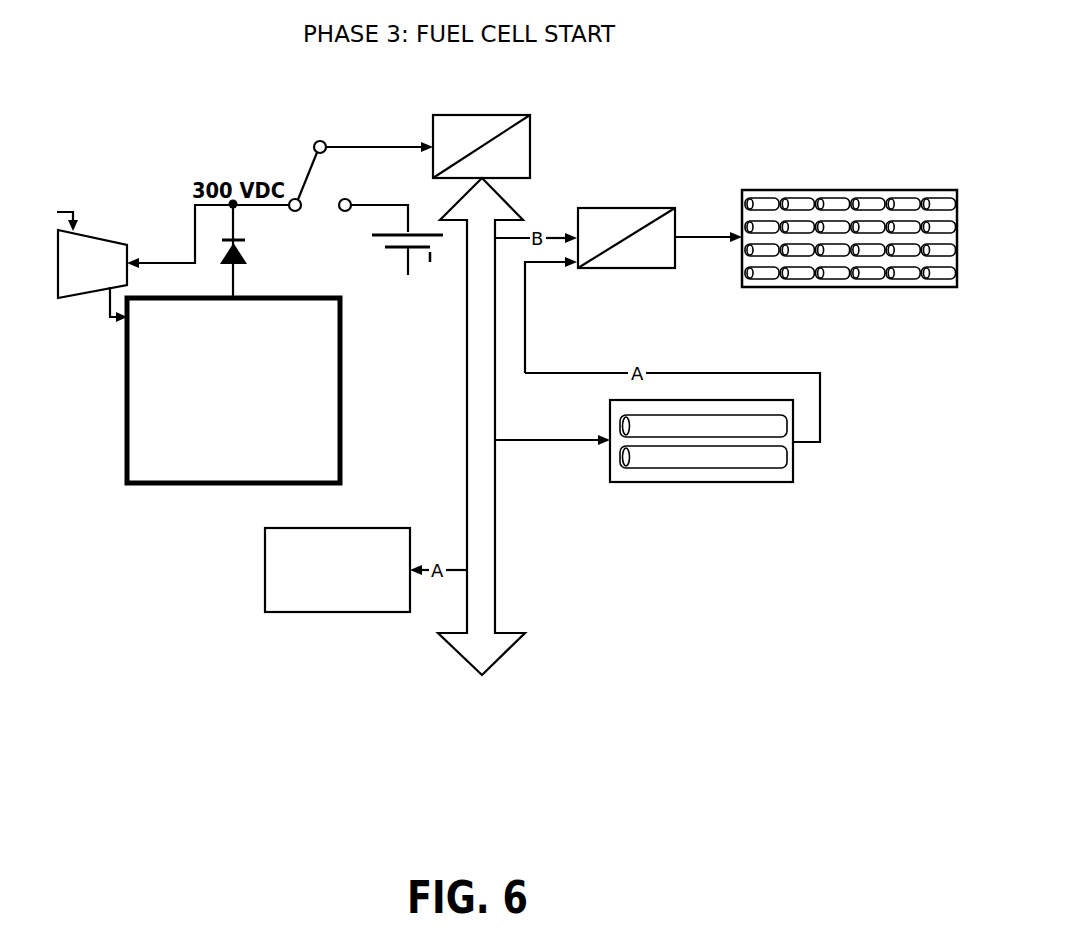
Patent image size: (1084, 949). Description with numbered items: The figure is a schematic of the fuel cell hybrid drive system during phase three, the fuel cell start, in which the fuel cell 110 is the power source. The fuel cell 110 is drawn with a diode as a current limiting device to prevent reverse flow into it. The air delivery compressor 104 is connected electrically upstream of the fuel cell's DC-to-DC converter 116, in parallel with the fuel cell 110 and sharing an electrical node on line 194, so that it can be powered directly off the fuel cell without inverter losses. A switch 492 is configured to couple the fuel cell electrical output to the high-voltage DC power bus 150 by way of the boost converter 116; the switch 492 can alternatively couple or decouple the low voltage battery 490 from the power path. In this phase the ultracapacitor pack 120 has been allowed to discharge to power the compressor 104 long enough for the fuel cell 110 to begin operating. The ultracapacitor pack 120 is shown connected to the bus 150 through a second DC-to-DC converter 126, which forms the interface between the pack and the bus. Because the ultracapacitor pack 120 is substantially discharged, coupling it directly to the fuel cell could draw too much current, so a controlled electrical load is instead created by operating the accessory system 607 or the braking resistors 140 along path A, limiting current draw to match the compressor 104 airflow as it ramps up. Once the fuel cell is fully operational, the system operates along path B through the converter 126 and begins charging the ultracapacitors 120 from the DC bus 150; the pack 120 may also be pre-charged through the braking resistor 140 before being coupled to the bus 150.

The air delivery compressor 104 is at (110, 274).
The fuel cell 110 is at (248, 406).
The DC-to-DC converter 116 is at (482, 115).
The ultracapacitor pack 120 is at (840, 190).
The DC/DC converter 126 is at (612, 268).
The braking resistor 140 is at (700, 482).
The DC power bus 150 is at (495, 532).
The line 194 is at (182, 211).
The low voltage battery 490 is at (443, 287).
The switch 492 is at (297, 147).
The accessory system 607 is at (337, 612).